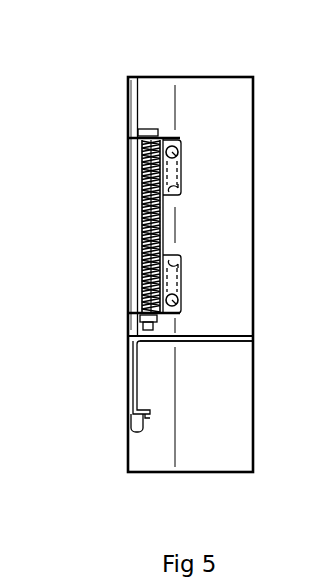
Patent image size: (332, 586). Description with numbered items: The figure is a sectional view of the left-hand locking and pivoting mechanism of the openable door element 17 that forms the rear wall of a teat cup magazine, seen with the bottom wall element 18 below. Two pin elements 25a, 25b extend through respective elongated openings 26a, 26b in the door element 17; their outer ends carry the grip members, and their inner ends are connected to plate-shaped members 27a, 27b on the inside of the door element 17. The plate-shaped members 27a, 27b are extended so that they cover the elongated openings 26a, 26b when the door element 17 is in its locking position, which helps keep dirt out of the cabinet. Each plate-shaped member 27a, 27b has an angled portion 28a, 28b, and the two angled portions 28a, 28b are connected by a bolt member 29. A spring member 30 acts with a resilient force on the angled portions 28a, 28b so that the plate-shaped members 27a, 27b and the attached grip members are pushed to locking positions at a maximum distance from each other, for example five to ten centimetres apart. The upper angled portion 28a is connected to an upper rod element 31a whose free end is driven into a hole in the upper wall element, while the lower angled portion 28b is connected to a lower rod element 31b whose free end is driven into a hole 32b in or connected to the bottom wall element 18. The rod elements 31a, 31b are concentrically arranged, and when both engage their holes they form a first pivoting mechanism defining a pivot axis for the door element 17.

The door element 17 is at (227, 95).
The bottom wall element 18 is at (213, 425).
The pin element 25a is at (178, 148).
The pin element 25b is at (177, 305).
The elongated opening 26a is at (178, 197).
The elongated opening 26b is at (177, 258).
The plate-shaped member 27a is at (165, 176).
The plate-shaped member 27b is at (163, 280).
The angled portion 28a is at (140, 140).
The angled portion 28b is at (137, 318).
The bolt member 29 is at (143, 217).
The spring member 30 is at (140, 238).
The upper rod element 31a is at (137, 105).
The lower rod element 31b is at (135, 372).
The hole 32b is at (128, 422).